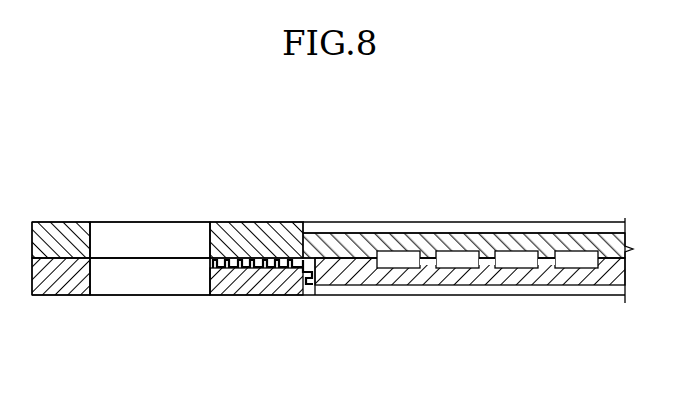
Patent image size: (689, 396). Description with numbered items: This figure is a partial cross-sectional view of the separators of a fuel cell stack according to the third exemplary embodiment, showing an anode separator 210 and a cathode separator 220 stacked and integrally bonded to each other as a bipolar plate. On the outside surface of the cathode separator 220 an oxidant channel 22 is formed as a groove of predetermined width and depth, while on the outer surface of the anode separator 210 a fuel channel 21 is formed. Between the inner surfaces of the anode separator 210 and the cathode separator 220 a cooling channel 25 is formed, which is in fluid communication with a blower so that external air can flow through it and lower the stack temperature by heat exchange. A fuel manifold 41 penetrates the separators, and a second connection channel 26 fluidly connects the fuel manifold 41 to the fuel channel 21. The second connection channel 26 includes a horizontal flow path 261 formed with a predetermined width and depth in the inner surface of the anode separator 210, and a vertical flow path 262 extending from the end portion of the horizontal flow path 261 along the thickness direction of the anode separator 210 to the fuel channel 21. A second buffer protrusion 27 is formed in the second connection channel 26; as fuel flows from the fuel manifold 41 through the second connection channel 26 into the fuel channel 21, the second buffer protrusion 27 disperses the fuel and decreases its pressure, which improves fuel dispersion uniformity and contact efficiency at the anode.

The cathode separator 220 is at (58, 230).
The anode separator 210 is at (60, 282).
The fuel manifold 41 is at (131, 232).
The second buffer protrusion 27 is at (270, 263).
The horizontal flow path 261 is at (262, 270).
The vertical flow path 262 is at (313, 276).
The second connection channel 26 is at (272, 322).
The oxidant channel 22 is at (473, 230).
The fuel channel 21 is at (488, 290).
The cooling channel 25 is at (576, 257).